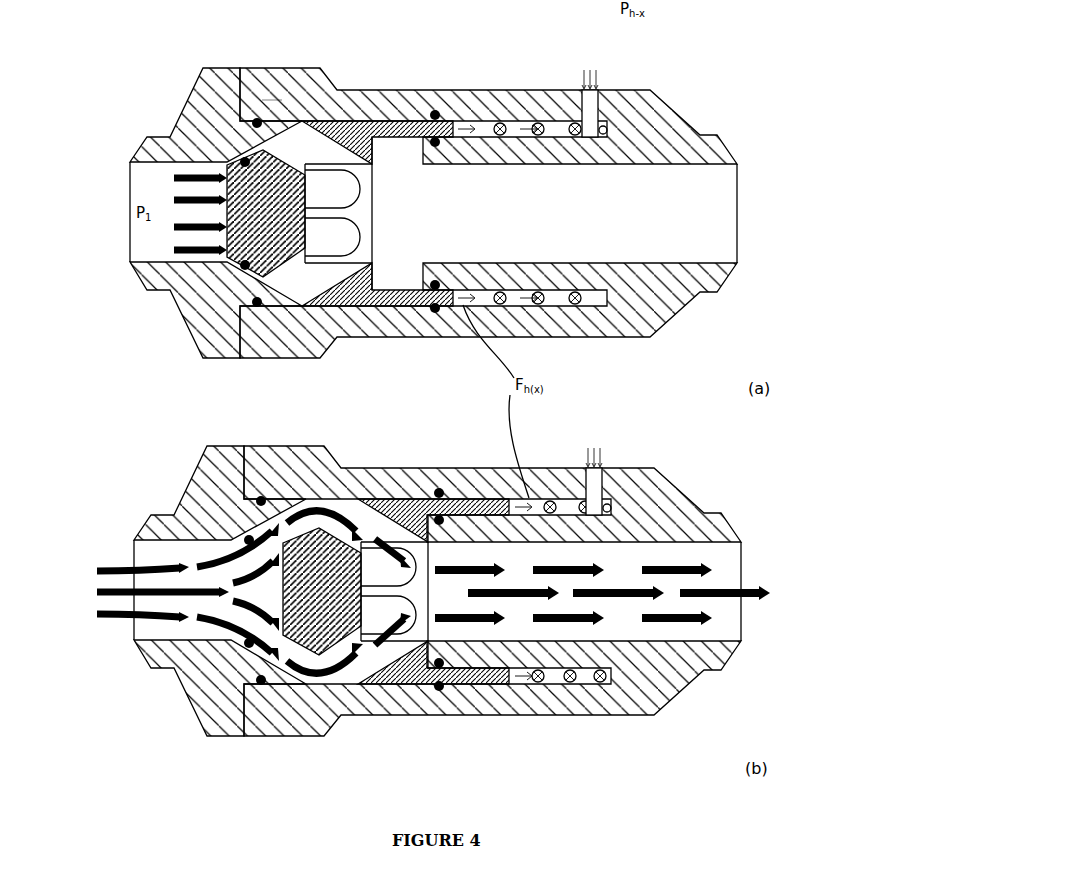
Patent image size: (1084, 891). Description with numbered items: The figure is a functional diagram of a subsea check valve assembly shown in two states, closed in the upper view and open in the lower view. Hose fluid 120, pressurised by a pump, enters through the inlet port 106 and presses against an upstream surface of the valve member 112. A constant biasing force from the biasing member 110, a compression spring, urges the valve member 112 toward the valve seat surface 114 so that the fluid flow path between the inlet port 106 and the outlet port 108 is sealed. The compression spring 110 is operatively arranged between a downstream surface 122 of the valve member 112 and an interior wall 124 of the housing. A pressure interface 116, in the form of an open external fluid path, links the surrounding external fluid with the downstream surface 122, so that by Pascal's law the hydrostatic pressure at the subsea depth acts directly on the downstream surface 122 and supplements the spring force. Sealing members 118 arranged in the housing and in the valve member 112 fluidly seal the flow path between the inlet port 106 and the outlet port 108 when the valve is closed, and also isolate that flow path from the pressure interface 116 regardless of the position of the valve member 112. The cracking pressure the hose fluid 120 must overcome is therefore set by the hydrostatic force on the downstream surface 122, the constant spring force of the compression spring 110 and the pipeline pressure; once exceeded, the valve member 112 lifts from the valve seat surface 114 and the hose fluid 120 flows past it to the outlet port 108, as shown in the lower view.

The inlet port 106 is at (120, 228).
The outlet port 108 is at (752, 210).
The biasing member 110 is at (512, 103).
The valve member 112 is at (205, 296).
The valve seat surface 114 is at (243, 157).
The pressure interface 116 is at (618, 4).
The sealing members 118 is at (262, 106).
The hose fluid 120 is at (187, 176).
The downstream surface 122 is at (462, 124).
The interior wall 124 is at (607, 126).